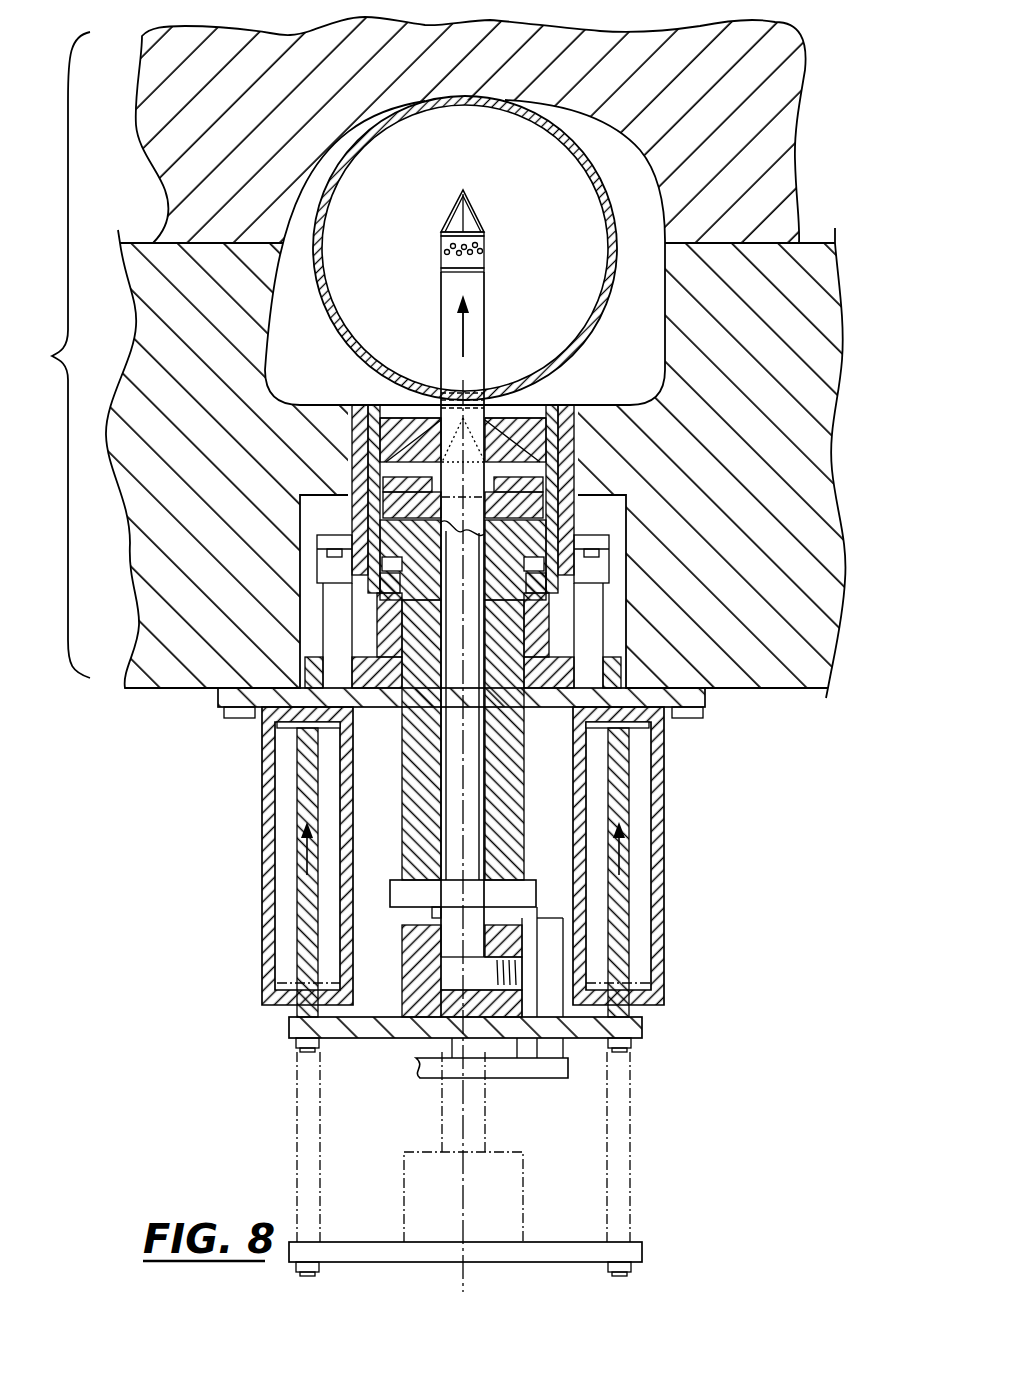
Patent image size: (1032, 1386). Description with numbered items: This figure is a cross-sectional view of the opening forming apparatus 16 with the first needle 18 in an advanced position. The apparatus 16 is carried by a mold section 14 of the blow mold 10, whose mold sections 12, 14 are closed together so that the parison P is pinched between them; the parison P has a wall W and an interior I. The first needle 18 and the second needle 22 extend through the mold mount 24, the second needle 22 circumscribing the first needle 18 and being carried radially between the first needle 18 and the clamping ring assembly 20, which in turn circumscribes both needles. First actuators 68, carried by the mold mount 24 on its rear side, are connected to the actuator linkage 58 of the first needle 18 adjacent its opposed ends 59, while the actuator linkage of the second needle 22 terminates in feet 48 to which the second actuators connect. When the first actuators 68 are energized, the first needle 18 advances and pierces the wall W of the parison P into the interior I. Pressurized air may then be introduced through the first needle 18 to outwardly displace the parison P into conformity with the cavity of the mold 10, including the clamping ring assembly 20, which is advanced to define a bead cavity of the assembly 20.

The blow mold 10 is at (55, 355).
The mold section 12 is at (745, 62).
The mold section 14 is at (790, 277).
The opening forming apparatus 16 is at (442, 982).
The first needle 18 is at (499, 234).
The clamping ring assembly 20 is at (498, 593).
The second needle 22 is at (522, 431).
The mold mount 24 is at (555, 407).
The feet 48 is at (520, 1070).
The actuator linkage 58 is at (452, 1030).
The opposed ends 59 is at (300, 1025).
The first actuators 68 is at (262, 958).
The parison P is at (586, 248).
The wall W is at (612, 215).
The interior I is at (565, 277).